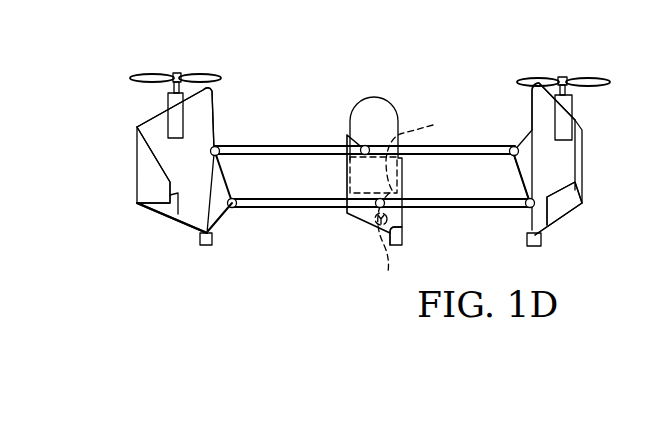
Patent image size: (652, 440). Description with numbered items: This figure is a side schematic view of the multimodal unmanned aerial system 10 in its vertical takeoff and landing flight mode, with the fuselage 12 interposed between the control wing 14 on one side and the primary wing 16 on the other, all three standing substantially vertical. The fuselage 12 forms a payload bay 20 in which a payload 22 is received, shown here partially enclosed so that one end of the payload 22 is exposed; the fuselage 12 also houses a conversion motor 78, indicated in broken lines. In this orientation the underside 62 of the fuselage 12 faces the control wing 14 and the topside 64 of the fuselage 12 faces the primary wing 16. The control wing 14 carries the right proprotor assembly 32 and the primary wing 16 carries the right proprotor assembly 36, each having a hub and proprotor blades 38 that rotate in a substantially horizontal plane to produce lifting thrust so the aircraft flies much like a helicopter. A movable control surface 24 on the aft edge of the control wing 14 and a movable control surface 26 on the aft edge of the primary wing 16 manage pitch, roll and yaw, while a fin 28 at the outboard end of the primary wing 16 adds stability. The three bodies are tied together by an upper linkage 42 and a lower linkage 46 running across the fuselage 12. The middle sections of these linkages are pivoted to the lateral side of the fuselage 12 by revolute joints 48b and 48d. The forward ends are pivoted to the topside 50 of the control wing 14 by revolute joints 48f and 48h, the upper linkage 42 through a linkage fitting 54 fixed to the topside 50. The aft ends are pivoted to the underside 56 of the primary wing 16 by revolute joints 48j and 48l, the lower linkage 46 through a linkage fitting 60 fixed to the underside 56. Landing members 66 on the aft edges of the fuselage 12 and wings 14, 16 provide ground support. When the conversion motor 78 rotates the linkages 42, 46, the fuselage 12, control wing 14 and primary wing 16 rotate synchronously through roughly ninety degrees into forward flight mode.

The multimodal unmanned aerial system 10 is at (448, 60).
The fuselage 12 is at (346, 140).
The control wing 14 is at (583, 148).
The primary wing 16 is at (137, 127).
The payload bay 20 is at (423, 157).
The payload 22 is at (374, 98).
The movable control surface 24 is at (563, 213).
The movable control surface 26 is at (167, 210).
The fin 28 is at (147, 183).
The right proprotor assembly 32 is at (573, 112).
The right proprotor assembly 36 is at (168, 98).
The proprotor blade 38 is at (140, 73).
The upper linkage 42 is at (308, 145).
The lower linkage 46 is at (322, 208).
The revolute joint 48b is at (366, 147).
The revolute joint 48d is at (376, 204).
The revolute joint 48f is at (518, 151).
The revolute joint 48h is at (528, 210).
The revolute joint 48j is at (210, 151).
The revolute joint 48l is at (234, 208).
The topside of control wing 50 is at (531, 107).
The linkage fitting 54 is at (523, 160).
The underside of primary wing 56 is at (214, 98).
The linkage fitting 60 is at (226, 186).
The underside of fuselage 62 is at (405, 220).
The topside of fuselage 64 is at (347, 186).
The landing member 66 is at (207, 245).
The conversion motor 78 is at (388, 252).